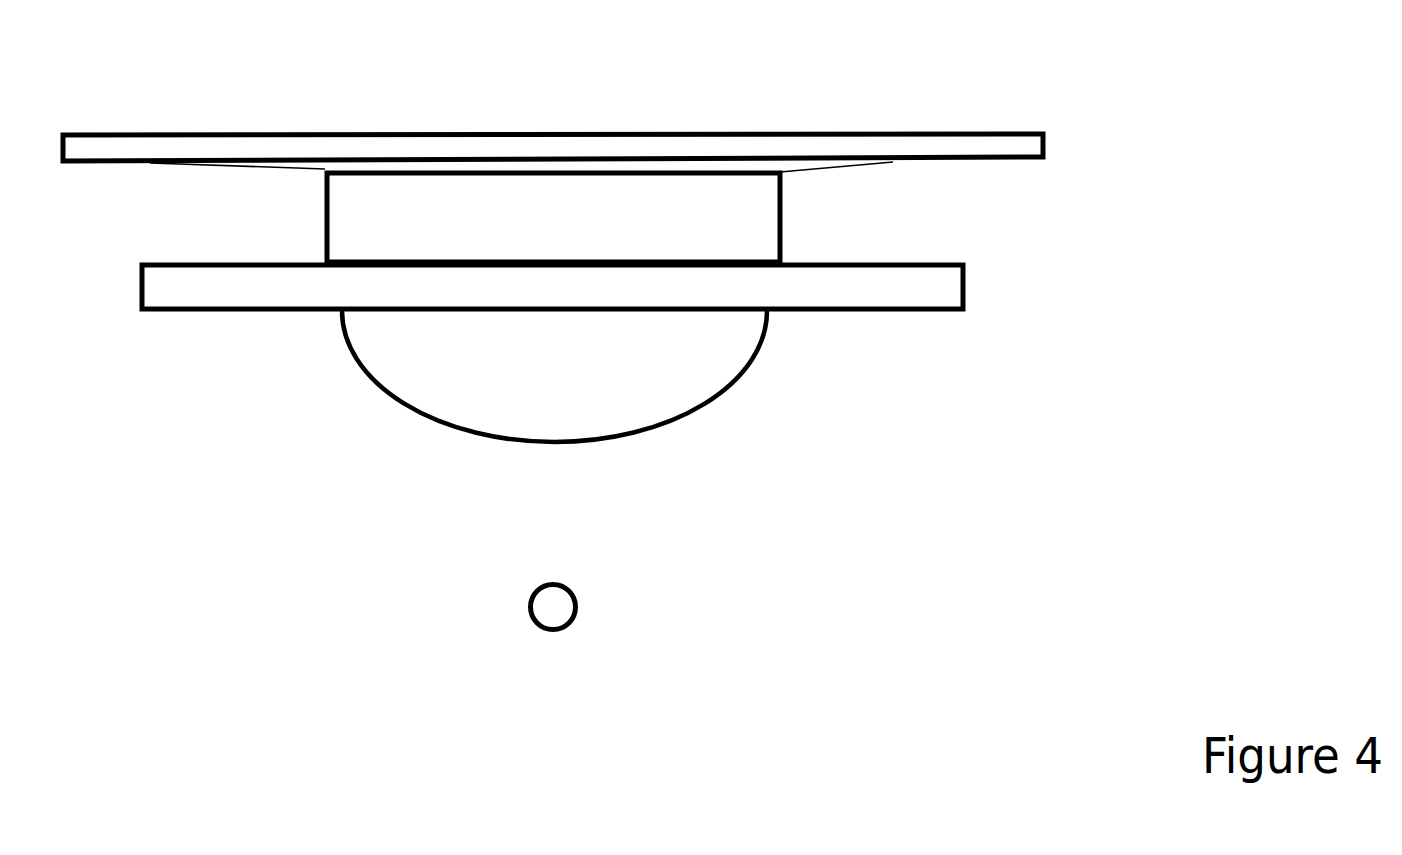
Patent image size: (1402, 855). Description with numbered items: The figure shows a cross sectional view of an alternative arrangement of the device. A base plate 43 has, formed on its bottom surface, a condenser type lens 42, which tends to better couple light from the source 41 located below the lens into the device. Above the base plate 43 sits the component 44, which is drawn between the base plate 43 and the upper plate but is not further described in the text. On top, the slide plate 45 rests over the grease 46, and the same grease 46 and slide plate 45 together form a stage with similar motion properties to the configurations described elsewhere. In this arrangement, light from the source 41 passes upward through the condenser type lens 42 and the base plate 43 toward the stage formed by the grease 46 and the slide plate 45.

The source 41 is at (567, 615).
The condenser type lens 42 is at (605, 395).
The base plate 43 is at (893, 283).
The liquid crystal cell 44 is at (375, 218).
The slide plate 45 is at (893, 147).
The grease 46 is at (324, 168).